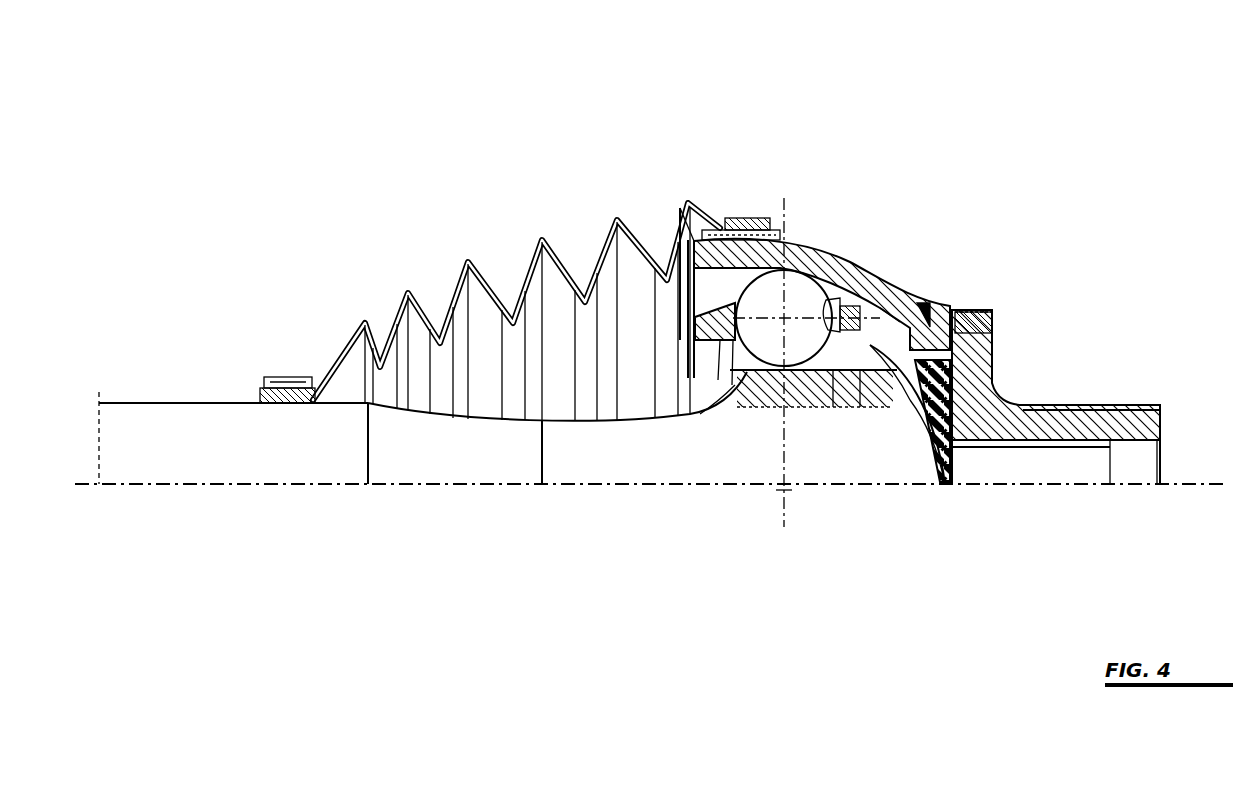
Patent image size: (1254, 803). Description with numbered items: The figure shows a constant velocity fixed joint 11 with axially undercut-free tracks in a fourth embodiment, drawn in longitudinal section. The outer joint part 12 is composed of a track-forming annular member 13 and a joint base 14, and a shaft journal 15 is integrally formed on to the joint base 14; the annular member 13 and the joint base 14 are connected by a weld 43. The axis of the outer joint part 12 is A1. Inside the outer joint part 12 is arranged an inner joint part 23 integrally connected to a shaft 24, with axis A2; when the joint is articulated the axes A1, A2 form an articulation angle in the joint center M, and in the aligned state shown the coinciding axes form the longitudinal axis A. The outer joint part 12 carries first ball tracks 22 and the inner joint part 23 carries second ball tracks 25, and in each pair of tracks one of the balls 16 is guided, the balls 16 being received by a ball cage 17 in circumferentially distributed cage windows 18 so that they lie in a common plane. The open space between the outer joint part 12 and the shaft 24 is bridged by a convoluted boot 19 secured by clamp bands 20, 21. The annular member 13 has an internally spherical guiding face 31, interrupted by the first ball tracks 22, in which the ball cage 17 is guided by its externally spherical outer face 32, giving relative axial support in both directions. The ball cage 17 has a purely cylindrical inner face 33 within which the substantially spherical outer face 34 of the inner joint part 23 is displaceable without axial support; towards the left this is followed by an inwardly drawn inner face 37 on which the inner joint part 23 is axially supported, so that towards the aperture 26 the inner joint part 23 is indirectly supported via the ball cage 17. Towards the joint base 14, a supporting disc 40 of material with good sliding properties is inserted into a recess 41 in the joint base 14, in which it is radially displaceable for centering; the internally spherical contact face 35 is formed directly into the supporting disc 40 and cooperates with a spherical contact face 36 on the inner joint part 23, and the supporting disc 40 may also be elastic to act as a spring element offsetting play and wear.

The constant velocity fixed joint 11 is at (838, 137).
The outer joint part 12 is at (907, 259).
The annular member 13 is at (884, 292).
The joint base 14 is at (992, 318).
The shaft journal 15 is at (1068, 422).
The balls 16 is at (778, 298).
The ball cage 17 is at (680, 280).
The cage windows 18 is at (829, 298).
The convoluted boot 19 is at (516, 306).
The clamp band 20 is at (745, 217).
The clamp band 21 is at (287, 376).
The first ball tracks 22 is at (718, 237).
The inner joint part 23 is at (862, 447).
The shaft 24 is at (267, 467).
The second ball tracks 25 is at (748, 407).
The aperture 26 is at (598, 300).
The internally spherical guiding face 31 is at (872, 312).
The externally spherical outer face 32 is at (846, 306).
The cylindrical inner face 33 is at (828, 385).
The spherical outer face 34 is at (855, 385).
The internally spherical contact face 35 is at (910, 420).
The spherical contact face 36 is at (935, 445).
The inner face 37 is at (722, 385).
The supporting disc 40 is at (946, 486).
The recess 41 is at (962, 312).
The weld 43 is at (924, 316).
The joint center M is at (780, 492).
The longitudinal axis A is at (1190, 486).
The axis of the outer joint part A1 is at (1037, 486).
The axis of the inner joint part A2 is at (447, 486).